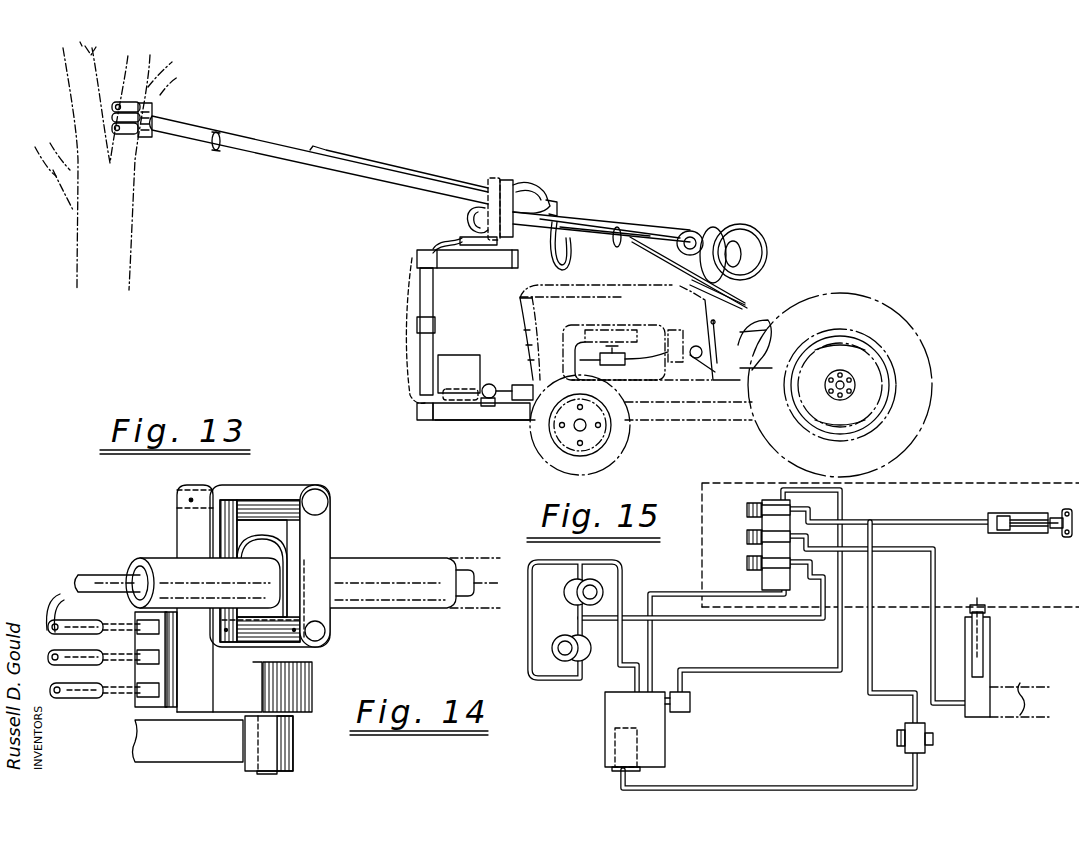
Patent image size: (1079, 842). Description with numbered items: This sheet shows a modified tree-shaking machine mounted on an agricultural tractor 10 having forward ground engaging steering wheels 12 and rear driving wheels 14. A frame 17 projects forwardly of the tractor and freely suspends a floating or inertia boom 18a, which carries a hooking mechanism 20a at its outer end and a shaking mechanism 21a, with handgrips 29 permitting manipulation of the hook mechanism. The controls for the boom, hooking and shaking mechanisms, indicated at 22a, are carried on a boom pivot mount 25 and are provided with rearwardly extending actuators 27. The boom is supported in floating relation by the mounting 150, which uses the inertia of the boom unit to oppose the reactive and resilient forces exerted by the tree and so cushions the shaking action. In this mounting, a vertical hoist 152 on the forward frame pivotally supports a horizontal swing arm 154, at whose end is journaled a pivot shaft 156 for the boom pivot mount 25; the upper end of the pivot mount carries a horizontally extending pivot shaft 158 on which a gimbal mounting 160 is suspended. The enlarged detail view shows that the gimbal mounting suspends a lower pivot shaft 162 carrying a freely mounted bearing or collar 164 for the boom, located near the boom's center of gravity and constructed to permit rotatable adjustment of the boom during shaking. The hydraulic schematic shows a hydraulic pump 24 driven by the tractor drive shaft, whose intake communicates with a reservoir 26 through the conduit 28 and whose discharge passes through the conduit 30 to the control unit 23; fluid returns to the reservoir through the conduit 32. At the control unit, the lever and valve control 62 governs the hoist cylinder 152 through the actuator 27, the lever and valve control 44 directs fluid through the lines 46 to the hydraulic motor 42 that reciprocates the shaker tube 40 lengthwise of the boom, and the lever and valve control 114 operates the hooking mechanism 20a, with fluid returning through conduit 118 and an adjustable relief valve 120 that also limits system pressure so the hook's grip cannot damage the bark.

In FIG. 13, the agricultural tractor 10 is at (520, 312).
In FIG. 13, the forward ground engaging steering wheels 12 is at (551, 464).
In FIG. 13, the rear driving wheels 14 is at (931, 427).
In FIG. 13, the frame 17 is at (453, 421).
In FIG. 15, the frame 17 is at (1005, 712).
In FIG. 13, the boom 18a is at (285, 150).
In FIG. 14, the boom 18a is at (405, 566).
In FIG. 13, the hooking mechanism 20a is at (153, 112).
In FIG. 15, the hooking mechanism 20a is at (1051, 511).
In FIG. 13, the shaking mechanism 21a is at (697, 237).
In FIG. 15, the shaking mechanism 21a is at (612, 580).
In FIG. 13, the controls 22a is at (458, 230).
In FIG. 15, the controls 22a is at (765, 492).
In FIG. 13, the control unit 23 is at (466, 215).
In FIG. 14, the control unit 23 is at (138, 702).
In FIG. 15, the control unit 23 is at (768, 577).
In FIG. 13, the hydraulic pump 24 is at (509, 402).
In FIG. 15, the hydraulic pump 24 is at (930, 738).
In FIG. 13, the boom pivot mount 25 is at (494, 178).
In FIG. 14, the boom pivot mount 25 is at (190, 530).
In FIG. 13, the reservoir 26 is at (460, 355).
In FIG. 15, the reservoir 26 is at (612, 715).
In FIG. 13, the actuator 27 is at (566, 268).
In FIG. 14, the actuator 27 is at (58, 599).
In FIG. 13, the conduit 28 is at (491, 384).
In FIG. 15, the conduit 28 is at (770, 787).
In FIG. 13, the handgrips 29 is at (770, 257).
In FIG. 13, the conduit 30 is at (484, 407).
In FIG. 15, the conduit 30 is at (885, 692).
In FIG. 13, the conduit 32 is at (484, 383).
In FIG. 15, the conduit 32 is at (683, 592).
In FIG. 14, the shaker tube 40 is at (115, 574).
In FIG. 15, the shaker tube 40 is at (1003, 513).
In FIG. 15, the hydraulic motor 42 is at (560, 640).
In FIG. 14, the lever and valve control 44 is at (134, 690).
In FIG. 15, the lever and valve control 44 is at (746, 562).
In FIG. 15, the line 46 is at (672, 621).
In FIG. 14, the lever and valve control 62 is at (133, 656).
In FIG. 15, the lever and valve control 62 is at (746, 535).
In FIG. 14, the lever and valve control 114 is at (120, 624).
In FIG. 15, the lever and valve control 114 is at (746, 508).
In FIG. 15, the conduit 118 is at (785, 670).
In FIG. 15, the adjustable relief valve 120 is at (690, 703).
In FIG. 13, the mounting 150 is at (523, 184).
In FIG. 14, the mounting 150 is at (340, 520).
In FIG. 13, the vertical hoist 152 is at (420, 343).
In FIG. 15, the vertical hoist 152 is at (991, 660).
In FIG. 13, the swing arm 154 is at (455, 262).
In FIG. 14, the swing arm 154 is at (198, 746).
In FIG. 15, the swing arm 154 is at (1024, 608).
In FIG. 14, the pivot shaft 156 is at (276, 774).
In FIG. 14, the pivot shaft 158 is at (318, 502).
In FIG. 14, the gimbal mounting 160 is at (322, 611).
In FIG. 14, the lower pivot shaft 162 is at (326, 634).
In FIG. 14, the collar 164 is at (283, 570).